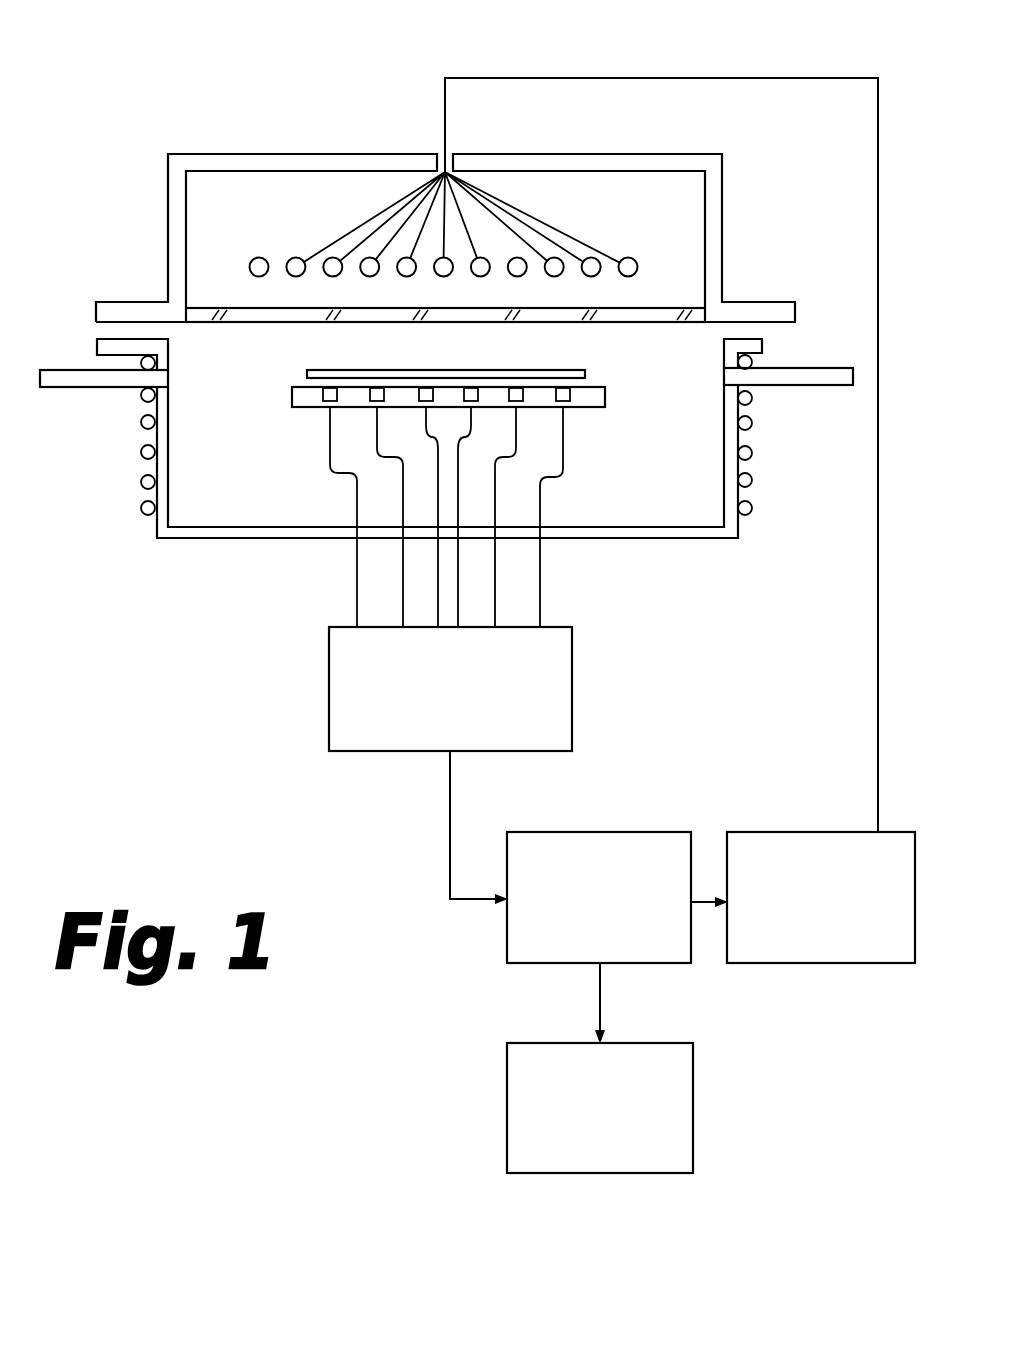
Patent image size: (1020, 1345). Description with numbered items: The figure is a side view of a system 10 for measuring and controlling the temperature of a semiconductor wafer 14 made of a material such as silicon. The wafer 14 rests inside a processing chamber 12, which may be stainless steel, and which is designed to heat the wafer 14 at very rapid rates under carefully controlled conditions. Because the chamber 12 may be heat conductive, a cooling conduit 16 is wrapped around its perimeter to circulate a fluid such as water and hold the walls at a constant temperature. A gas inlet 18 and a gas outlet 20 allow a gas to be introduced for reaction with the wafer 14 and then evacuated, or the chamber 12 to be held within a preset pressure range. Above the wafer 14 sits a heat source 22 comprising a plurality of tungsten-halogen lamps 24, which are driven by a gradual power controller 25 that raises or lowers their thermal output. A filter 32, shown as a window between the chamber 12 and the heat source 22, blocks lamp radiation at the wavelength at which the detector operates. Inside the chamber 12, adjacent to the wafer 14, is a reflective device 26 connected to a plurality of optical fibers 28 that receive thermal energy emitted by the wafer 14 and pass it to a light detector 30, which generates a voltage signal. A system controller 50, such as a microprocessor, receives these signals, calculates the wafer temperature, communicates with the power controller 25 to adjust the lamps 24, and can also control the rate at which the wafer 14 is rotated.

The system 10 is at (82, 88).
The processing chamber 12 is at (157, 466).
The wafer 14 is at (330, 370).
The cooling conduit 16 is at (141, 509).
The gas inlet 18 is at (840, 327).
The gas outlet 20 is at (60, 387).
The heat source 22 is at (293, 195).
The lamps 24 is at (266, 263).
The power controller 25 is at (795, 790).
The reflective device 26 is at (605, 393).
The optical fibers 28 is at (328, 428).
The light detector 30 is at (328, 657).
The filter 32 is at (638, 308).
The system controller 50 is at (587, 832).